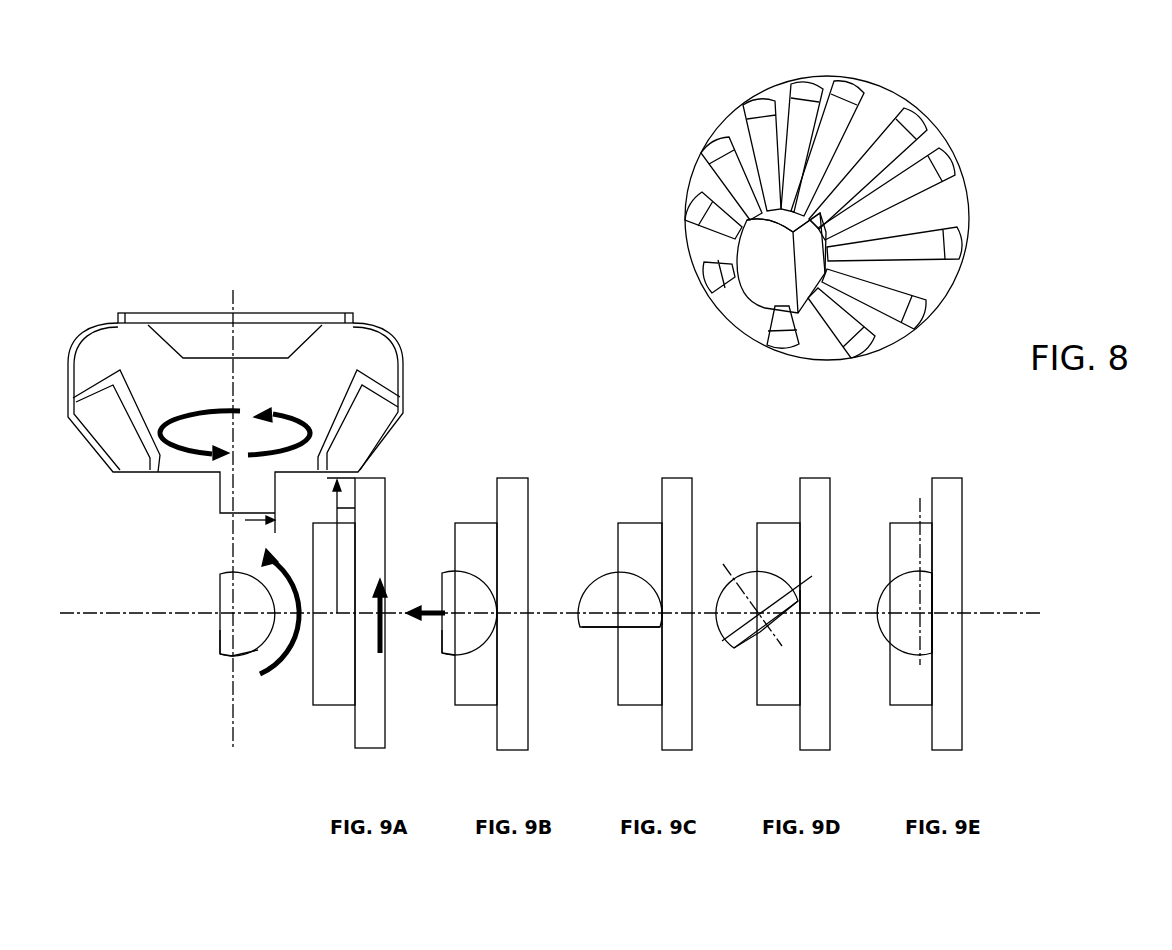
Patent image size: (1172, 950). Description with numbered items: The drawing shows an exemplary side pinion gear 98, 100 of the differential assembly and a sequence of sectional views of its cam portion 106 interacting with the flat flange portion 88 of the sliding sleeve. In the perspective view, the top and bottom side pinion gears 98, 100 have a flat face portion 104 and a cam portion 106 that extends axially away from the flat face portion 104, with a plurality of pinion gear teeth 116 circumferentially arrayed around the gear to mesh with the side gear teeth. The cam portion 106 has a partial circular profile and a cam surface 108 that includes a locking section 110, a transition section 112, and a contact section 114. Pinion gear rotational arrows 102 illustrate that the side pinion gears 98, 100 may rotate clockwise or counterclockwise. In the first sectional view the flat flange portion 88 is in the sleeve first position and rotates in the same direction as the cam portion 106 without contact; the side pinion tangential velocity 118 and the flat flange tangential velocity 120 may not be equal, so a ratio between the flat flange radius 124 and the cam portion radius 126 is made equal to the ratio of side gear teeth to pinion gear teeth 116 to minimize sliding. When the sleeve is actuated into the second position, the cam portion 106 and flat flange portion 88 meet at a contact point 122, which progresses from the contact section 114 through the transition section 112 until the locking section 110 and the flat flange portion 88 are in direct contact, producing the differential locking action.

In FIG. 9A, the flat flange portion 88 is at (373, 733).
In FIG. 9B, the flat flange portion 88 is at (517, 733).
In FIG. 9C, the flat flange portion 88 is at (675, 733).
In FIG. 9D, the flat flange portion 88 is at (813, 733).
In FIG. 9E, the flat flange portion 88 is at (948, 733).
In FIG. 9A, the top side pinion gear 98 is at (337, 367).
In FIG. 9A, the bottom side pinion gear 100 is at (278, 418).
In FIG. 9A, the pinion gear rotational arrows 102 is at (217, 470).
In FIG. 8, the flat face portion 104 is at (920, 333).
In FIG. 8, the cam portion 106 is at (765, 268).
In FIG. 9A, the cam portion 106 is at (222, 497).
In FIG. 9B, the cam portion 106 is at (470, 568).
In FIG. 9C, the cam portion 106 is at (603, 570).
In FIG. 9D, the cam portion 106 is at (722, 627).
In FIG. 9E, the cam portion 106 is at (910, 607).
In FIG. 8, the cam surface 108 is at (813, 197).
In FIG. 8, the locking section 110 is at (813, 278).
In FIG. 9A, the locking section 110 is at (222, 640).
In FIG. 9B, the locking section 110 is at (446, 642).
In FIG. 9C, the locking section 110 is at (602, 627).
In FIG. 9D, the locking section 110 is at (755, 647).
In FIG. 9E, the locking section 110 is at (932, 610).
In FIG. 8, the transition section 112 is at (802, 210).
In FIG. 9A, the transition section 112 is at (227, 653).
In FIG. 9B, the transition section 112 is at (450, 655).
In FIG. 9C, the transition section 112 is at (660, 617).
In FIG. 9D, the transition section 112 is at (800, 600).
In FIG. 9E, the transition section 112 is at (930, 570).
In FIG. 8, the contact section 114 is at (780, 208).
In FIG. 9A, the contact section 114 is at (255, 650).
In FIG. 9B, the contact section 114 is at (488, 573).
In FIG. 9C, the contact section 114 is at (630, 572).
In FIG. 9D, the contact section 114 is at (738, 573).
In FIG. 9E, the contact section 114 is at (878, 627).
In FIG. 8, the pinion gear teeth 116 is at (692, 205).
In FIG. 9A, the side pinion tangential velocity 118 is at (288, 660).
In FIG. 9A, the flat flange tangential velocity 120 is at (387, 595).
In FIG. 9B, the contact point 122 is at (497, 620).
In FIG. 9C, the contact point 122 is at (660, 622).
In FIG. 9D, the contact point 122 is at (800, 590).
In FIG. 9E, the contact point 122 is at (930, 638).
In FIG. 9A, the flat flange radius 124 is at (340, 510).
In FIG. 9A, the cam portion radius 126 is at (247, 520).